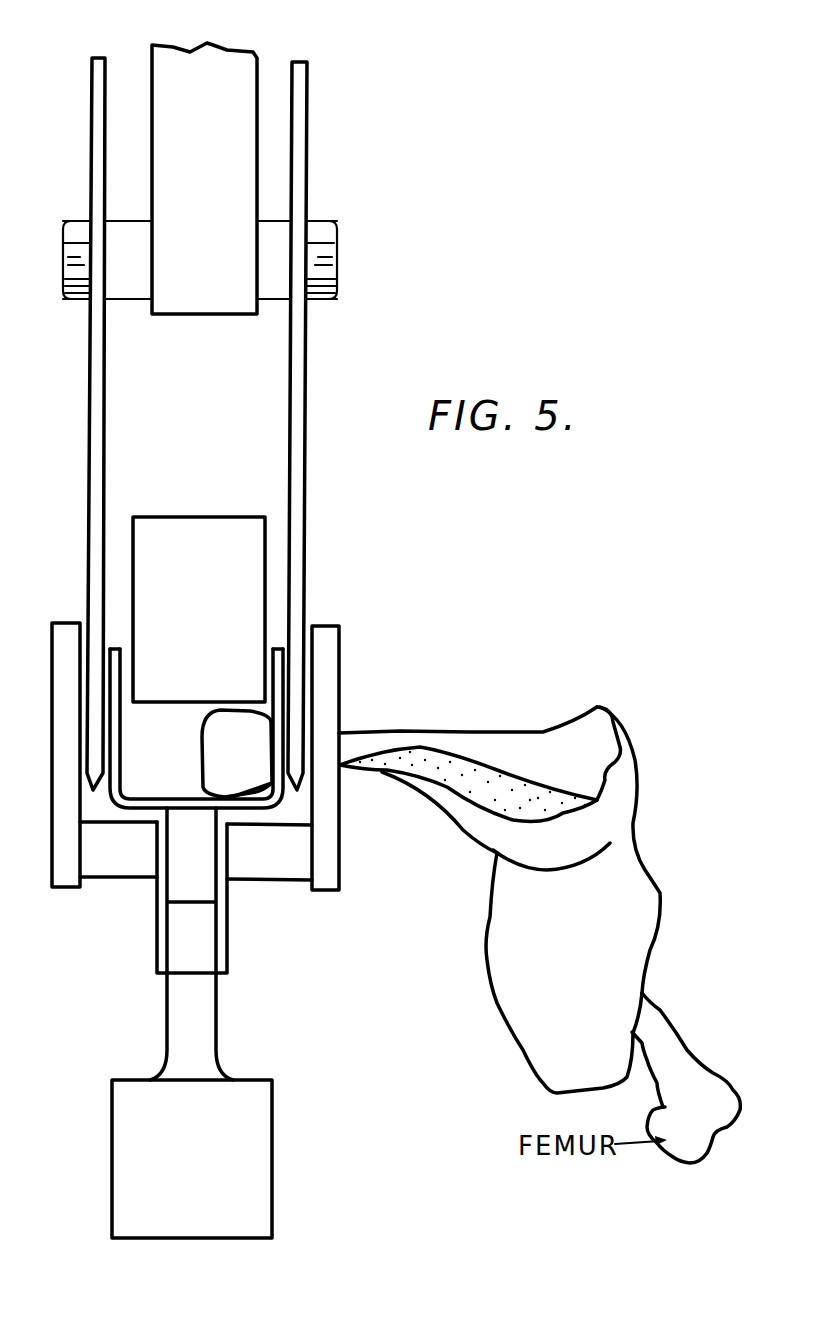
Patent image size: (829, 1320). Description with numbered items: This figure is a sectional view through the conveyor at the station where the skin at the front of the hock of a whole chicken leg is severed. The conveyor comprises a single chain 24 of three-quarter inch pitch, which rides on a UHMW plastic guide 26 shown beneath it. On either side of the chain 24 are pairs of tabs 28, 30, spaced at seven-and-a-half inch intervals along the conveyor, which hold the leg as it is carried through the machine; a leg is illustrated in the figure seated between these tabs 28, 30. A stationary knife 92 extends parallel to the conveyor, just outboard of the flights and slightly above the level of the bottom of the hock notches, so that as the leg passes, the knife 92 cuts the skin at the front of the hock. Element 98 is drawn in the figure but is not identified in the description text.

The chain 24 is at (228, 932).
The guide 26 is at (212, 1168).
The tab 28 is at (329, 667).
The tab 30 is at (121, 740).
The stationary knife 92 is at (89, 533).
The block 98 is at (213, 633).